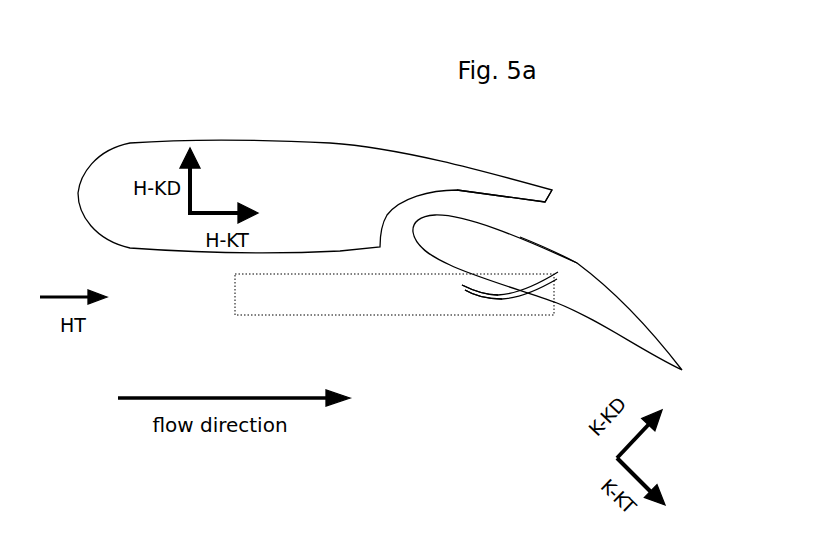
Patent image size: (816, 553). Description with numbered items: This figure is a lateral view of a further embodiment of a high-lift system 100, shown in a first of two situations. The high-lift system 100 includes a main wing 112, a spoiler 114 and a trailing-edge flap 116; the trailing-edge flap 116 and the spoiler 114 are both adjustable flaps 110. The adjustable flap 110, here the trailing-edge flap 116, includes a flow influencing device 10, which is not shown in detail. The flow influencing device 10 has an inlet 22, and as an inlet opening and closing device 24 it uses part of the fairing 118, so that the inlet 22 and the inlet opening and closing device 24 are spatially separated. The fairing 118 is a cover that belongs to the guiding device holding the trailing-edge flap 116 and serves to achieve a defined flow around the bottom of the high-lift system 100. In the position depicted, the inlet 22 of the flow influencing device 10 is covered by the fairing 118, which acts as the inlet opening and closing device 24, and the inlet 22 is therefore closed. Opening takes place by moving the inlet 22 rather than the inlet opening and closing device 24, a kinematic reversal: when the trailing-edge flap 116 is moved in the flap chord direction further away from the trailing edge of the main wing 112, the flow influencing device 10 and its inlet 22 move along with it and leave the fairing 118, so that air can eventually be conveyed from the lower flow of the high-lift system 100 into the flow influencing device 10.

The high-lift system 100 is at (288, 106).
The main wing 112 is at (130, 157).
The spoiler 114 is at (468, 177).
The adjustable flap 110 is at (507, 176).
The trailing-edge flap 116 is at (573, 270).
The inlet opening and closing device 24 is at (360, 313).
The inlet 22 is at (453, 288).
The fairing 118 is at (483, 320).
The flow influencing device 10 is at (506, 311).